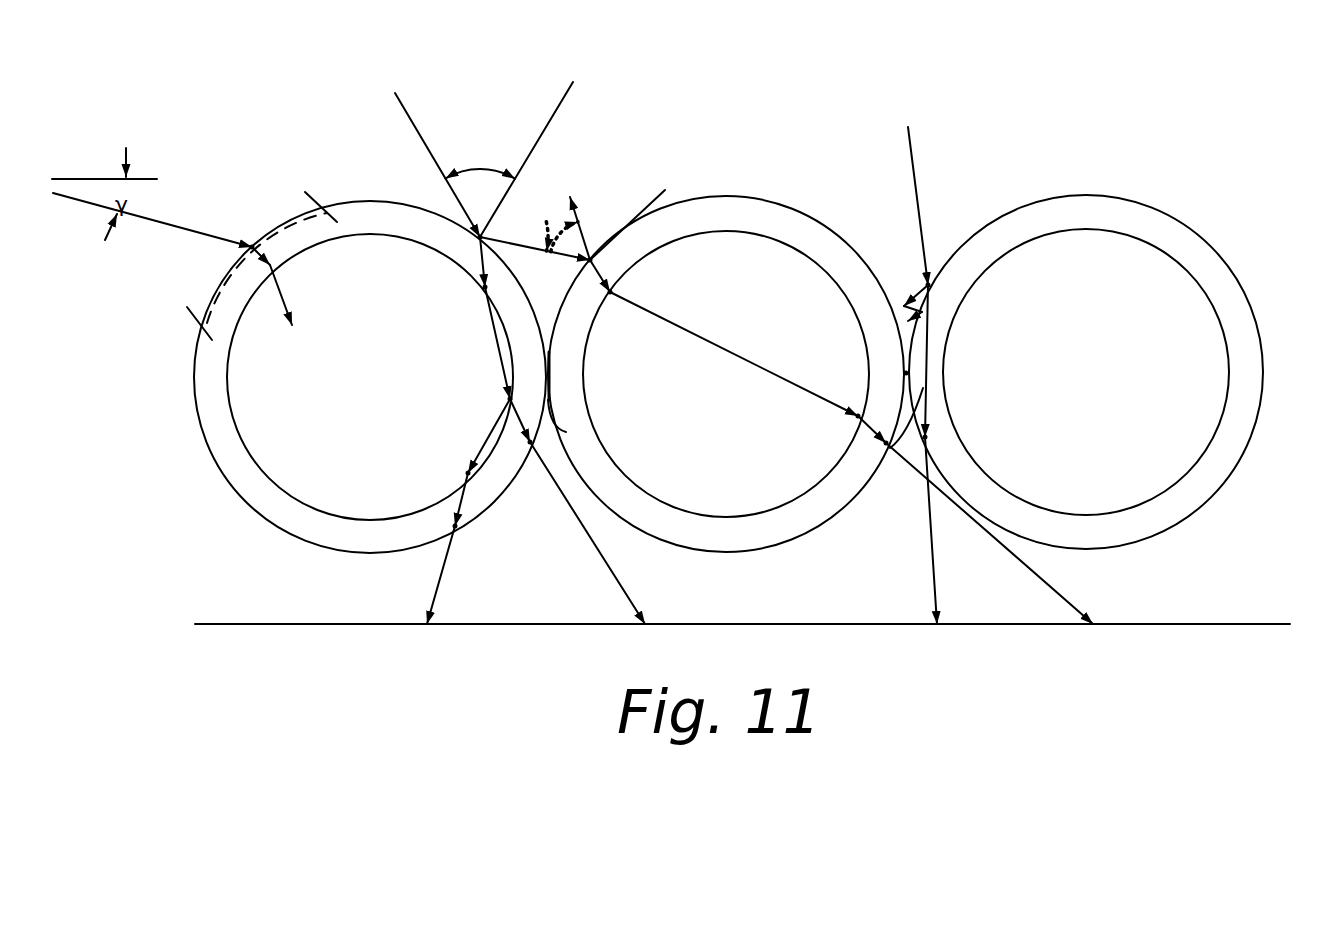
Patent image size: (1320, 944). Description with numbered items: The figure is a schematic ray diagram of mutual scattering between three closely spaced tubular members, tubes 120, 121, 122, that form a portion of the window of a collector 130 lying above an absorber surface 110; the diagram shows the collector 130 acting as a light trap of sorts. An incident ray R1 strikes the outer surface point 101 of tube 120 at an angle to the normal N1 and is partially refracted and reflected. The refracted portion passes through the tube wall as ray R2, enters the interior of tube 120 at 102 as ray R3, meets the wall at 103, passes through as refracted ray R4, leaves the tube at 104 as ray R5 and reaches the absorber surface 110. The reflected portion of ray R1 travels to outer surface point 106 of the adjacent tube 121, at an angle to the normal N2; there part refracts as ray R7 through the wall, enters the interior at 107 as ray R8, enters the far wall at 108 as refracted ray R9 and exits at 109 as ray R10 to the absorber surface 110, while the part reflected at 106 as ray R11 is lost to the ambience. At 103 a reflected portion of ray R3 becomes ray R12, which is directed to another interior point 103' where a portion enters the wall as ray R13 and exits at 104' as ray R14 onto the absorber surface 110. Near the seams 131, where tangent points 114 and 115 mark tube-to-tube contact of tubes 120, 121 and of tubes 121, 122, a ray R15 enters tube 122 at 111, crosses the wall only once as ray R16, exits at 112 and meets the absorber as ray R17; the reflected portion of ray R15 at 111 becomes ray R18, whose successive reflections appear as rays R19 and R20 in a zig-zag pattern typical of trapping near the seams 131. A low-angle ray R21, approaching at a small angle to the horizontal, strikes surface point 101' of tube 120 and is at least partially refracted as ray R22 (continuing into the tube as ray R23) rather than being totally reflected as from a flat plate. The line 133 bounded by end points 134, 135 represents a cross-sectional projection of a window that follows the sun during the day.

The collector 130 is at (737, 319).
The tube 120 is at (367, 370).
The tube 121 is at (729, 395).
The tube 122 is at (1162, 345).
The absorber surface 110 is at (853, 626).
The outer surface point 101 is at (420, 193).
The surface point 101' is at (217, 194).
The interior entry point 102 is at (486, 289).
The interior wall point 103 is at (580, 398).
The interior surface point 103' is at (419, 455).
The exit point 104 is at (623, 471).
The exit point 104' is at (500, 538).
The outer surface point 106 is at (594, 259).
The interior entry point 107 is at (613, 293).
The wall entry point 108 is at (854, 419).
The exit point 109 is at (885, 446).
The entry point 111 is at (930, 286).
The exit point 112 is at (927, 439).
The tangent point 114 is at (552, 378).
The tangent point 115 is at (905, 373).
The seam 131 is at (566, 432).
The line (window projection) 133 is at (307, 226).
The end point 134 is at (207, 323).
The end point 135 is at (313, 198).
The incident ray R1 is at (408, 112).
The refracted ray R2 is at (483, 262).
The ray R3 is at (494, 332).
The refracted ray R4 is at (530, 438).
The ray R5 is at (618, 581).
The refracted ray R7 is at (599, 269).
The ray R8 is at (691, 333).
The refracted ray R9 is at (872, 432).
The ray R10 is at (1038, 578).
The reflected ray R11 is at (652, 208).
The reflected ray R12 is at (490, 434).
The ray R13 is at (460, 500).
The ray R14 is at (441, 573).
The ray R15 is at (913, 162).
The ray R16 is at (928, 396).
The ray R17 is at (932, 582).
The reflected ray R18 is at (922, 300).
The reflected ray R19 is at (908, 308).
The reflected ray R20 is at (908, 320).
The incident ray R21 is at (200, 231).
The refracted ray R22 is at (252, 251).
The ray into tube R23 is at (283, 294).
The normal N1 is at (559, 106).
The normal N2 is at (573, 193).